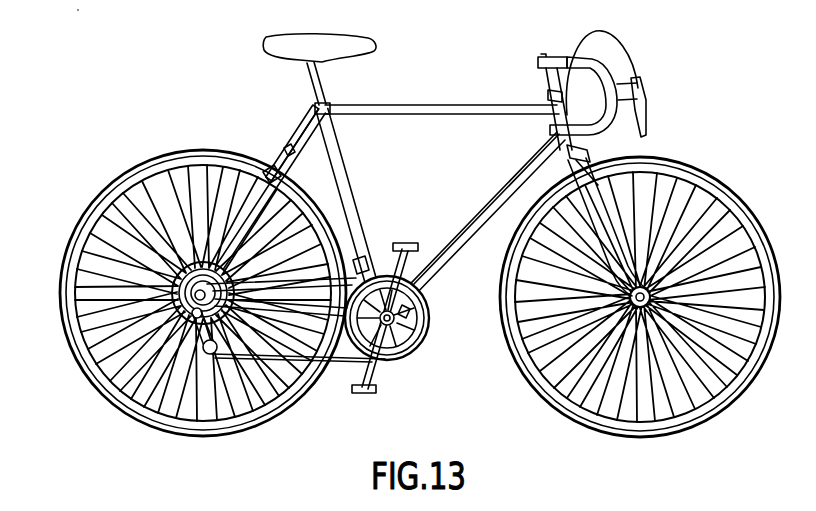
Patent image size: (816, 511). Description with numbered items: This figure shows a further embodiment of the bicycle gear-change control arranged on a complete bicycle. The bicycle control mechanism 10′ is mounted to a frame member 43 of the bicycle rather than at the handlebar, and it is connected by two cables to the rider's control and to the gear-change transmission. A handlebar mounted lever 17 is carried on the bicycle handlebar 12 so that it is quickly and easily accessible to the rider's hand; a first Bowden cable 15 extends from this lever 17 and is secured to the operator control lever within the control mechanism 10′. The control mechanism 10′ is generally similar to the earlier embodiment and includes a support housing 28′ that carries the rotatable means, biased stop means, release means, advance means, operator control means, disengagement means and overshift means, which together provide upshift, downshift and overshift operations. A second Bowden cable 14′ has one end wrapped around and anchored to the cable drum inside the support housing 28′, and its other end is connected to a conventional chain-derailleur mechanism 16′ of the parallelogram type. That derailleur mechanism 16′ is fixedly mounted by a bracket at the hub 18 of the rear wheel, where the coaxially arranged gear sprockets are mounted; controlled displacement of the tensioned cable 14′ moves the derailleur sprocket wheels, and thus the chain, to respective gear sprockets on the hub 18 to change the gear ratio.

The bicycle handlebar 12 is at (603, 68).
The handlebar mounted lever 17 is at (645, 108).
The first Bowden cable 15 is at (482, 210).
The frame member 43 is at (440, 270).
The chain-derailleur mechanism 16′ is at (110, 403).
The second Bowden cable 14′ is at (320, 367).
The bicycle control mechanism 10′ is at (418, 355).
The support housing 28′ is at (425, 340).
The hub 18 is at (640, 297).